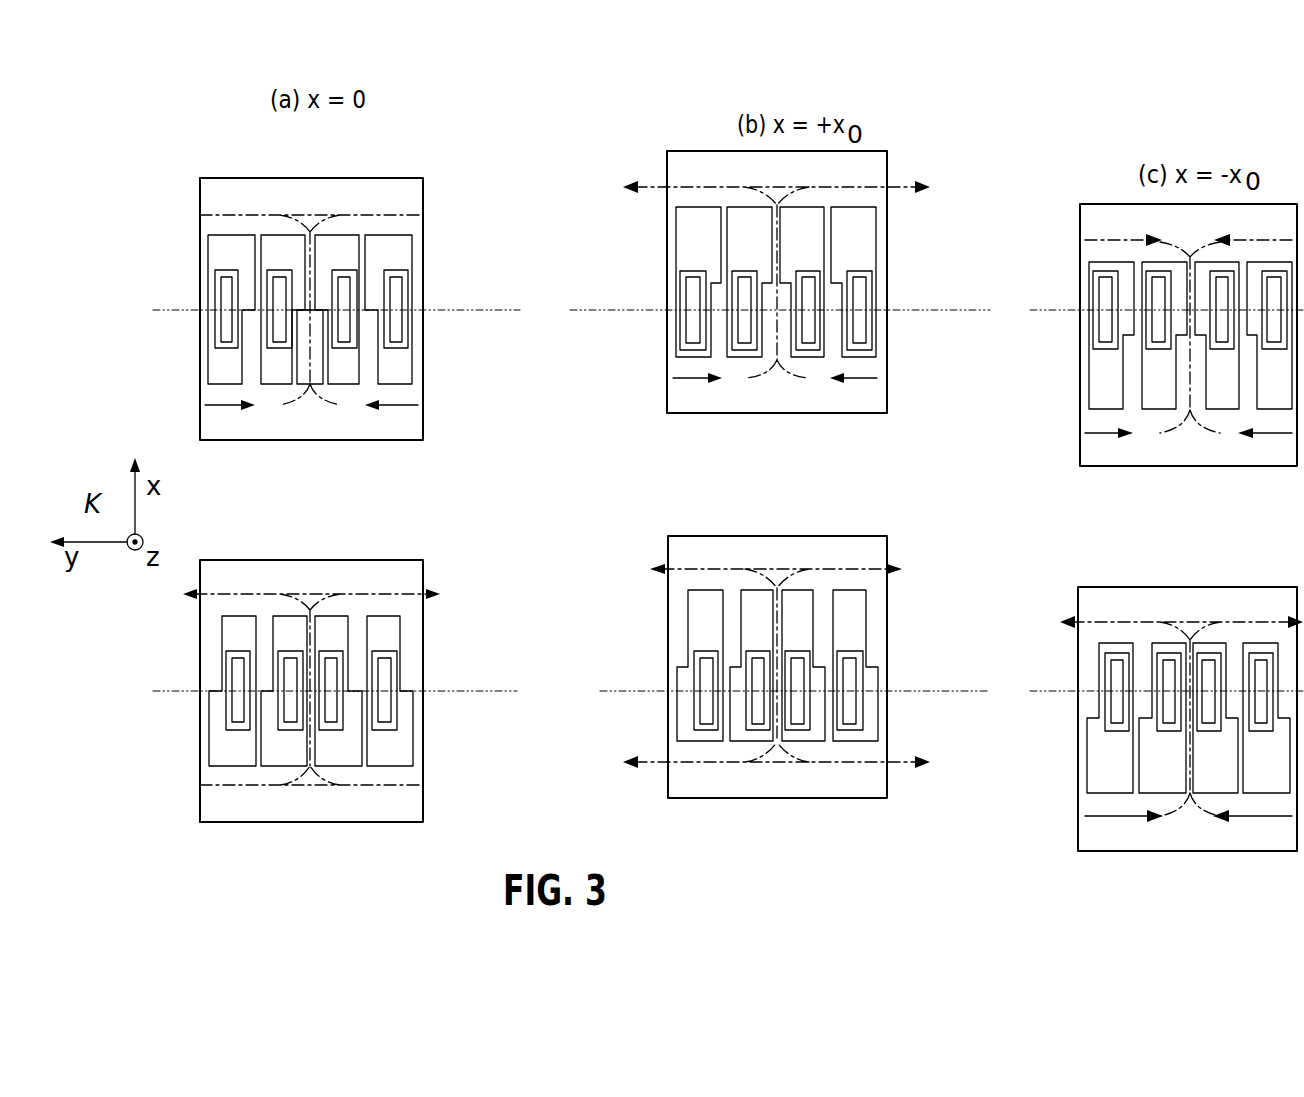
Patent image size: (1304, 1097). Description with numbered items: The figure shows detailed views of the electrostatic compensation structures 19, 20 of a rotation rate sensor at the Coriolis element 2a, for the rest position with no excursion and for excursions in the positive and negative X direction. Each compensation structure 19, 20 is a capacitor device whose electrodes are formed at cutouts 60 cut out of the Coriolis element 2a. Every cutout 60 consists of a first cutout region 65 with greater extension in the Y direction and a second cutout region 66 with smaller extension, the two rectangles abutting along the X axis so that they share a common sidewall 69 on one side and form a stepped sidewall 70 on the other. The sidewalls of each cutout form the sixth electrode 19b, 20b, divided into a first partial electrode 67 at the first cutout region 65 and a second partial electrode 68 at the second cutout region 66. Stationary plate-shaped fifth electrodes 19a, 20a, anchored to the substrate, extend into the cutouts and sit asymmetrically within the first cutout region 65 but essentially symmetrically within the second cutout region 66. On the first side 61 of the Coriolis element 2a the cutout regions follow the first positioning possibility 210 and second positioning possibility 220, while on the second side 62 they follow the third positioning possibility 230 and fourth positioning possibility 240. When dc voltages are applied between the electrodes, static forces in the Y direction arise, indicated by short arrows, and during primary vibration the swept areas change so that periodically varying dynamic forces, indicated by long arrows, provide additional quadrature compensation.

The Coriolis element 2a is at (400, 427).
The first compensation structure 19 is at (305, 162).
The second compensation structure 20 is at (423, 162).
The fifth electrode 19a is at (292, 673).
The sixth electrode 19b is at (240, 290).
The fifth electrode 20a is at (340, 337).
The sixth electrode 20b is at (330, 258).
The cutout 60 is at (270, 243).
The first side 61 is at (112, 170).
The second side 62 is at (186, 832).
The first cutout region 65 is at (450, 235).
The second cutout region 66 is at (450, 310).
The first partial electrode 67 is at (253, 260).
The second partial electrode 68 is at (238, 367).
The common sidewall 69 is at (210, 350).
The stepped sidewall 70 is at (243, 333).
The first positioning possibility 210 is at (773, 389).
The second positioning possibility 220 is at (783, 389).
The third positioning possibility 230 is at (775, 568).
The fourth positioning possibility 240 is at (780, 568).